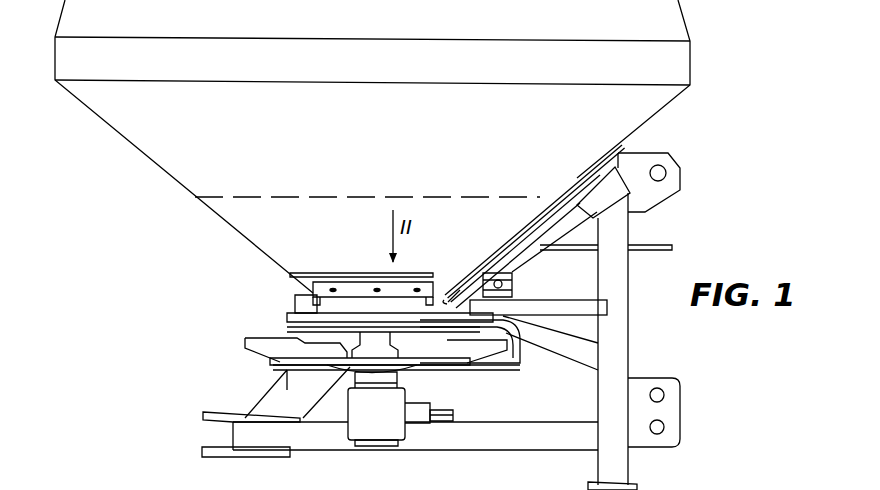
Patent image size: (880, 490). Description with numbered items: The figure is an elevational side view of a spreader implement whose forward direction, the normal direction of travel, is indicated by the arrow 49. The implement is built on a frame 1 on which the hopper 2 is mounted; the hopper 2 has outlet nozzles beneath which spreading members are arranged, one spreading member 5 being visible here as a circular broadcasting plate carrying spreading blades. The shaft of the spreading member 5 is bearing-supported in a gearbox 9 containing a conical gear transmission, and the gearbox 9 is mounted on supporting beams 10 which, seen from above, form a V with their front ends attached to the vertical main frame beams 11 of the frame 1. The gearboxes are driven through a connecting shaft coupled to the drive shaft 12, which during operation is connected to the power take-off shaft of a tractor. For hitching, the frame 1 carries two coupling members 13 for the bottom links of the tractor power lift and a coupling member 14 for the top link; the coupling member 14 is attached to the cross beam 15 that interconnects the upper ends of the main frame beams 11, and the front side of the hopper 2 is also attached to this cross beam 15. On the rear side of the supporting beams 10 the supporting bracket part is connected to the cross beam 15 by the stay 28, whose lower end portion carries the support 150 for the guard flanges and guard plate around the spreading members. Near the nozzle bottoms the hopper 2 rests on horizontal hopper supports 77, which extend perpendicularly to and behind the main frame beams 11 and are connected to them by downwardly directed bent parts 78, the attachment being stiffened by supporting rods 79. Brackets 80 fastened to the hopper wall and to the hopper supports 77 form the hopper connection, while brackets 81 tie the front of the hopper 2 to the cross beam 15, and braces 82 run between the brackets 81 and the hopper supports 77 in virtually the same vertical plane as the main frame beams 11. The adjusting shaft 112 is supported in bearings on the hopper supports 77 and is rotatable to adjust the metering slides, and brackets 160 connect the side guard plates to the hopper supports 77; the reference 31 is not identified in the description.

The frame 1 is at (618, 360).
The hopper 2 is at (127, 128).
The spreading member 5 is at (263, 361).
The gearbox 9 is at (383, 430).
The supporting beam 10 is at (510, 443).
The main frame beam 11 is at (620, 472).
The drive shaft 12 is at (455, 413).
The coupling member 13 is at (680, 410).
The coupling member 14 is at (687, 170).
The cross beam 15 is at (605, 205).
The stay 28 is at (527, 247).
The hopper interior 31 is at (402, 149).
The arrow 49 is at (787, 355).
The hopper support 77 is at (294, 303).
The bent part 78 is at (570, 345).
The supporting rod 79 is at (572, 300).
The bracket 80 is at (352, 273).
The bracket 81 is at (580, 175).
The brace 82 is at (540, 218).
The adjusting shaft 112 is at (482, 262).
The support 150 is at (288, 376).
The bracket 160 is at (285, 318).